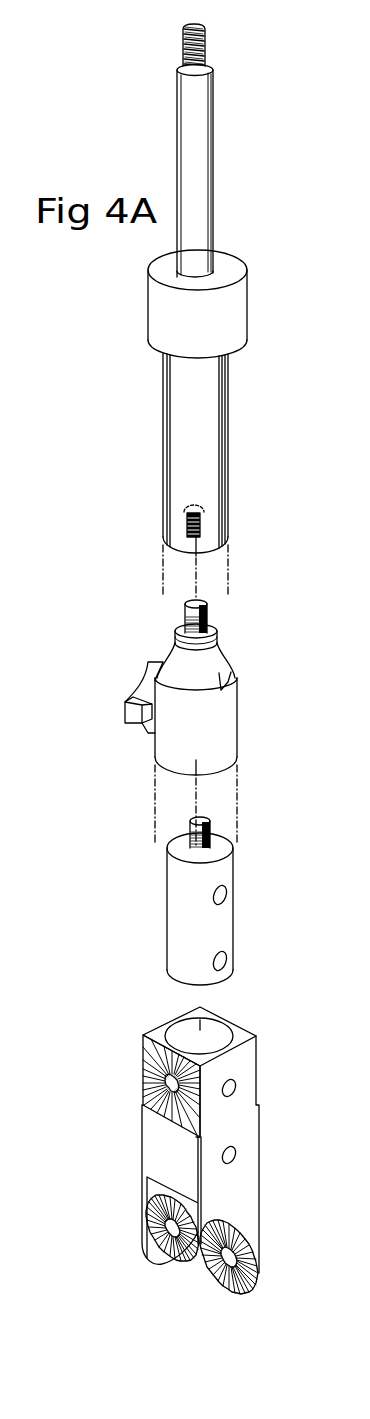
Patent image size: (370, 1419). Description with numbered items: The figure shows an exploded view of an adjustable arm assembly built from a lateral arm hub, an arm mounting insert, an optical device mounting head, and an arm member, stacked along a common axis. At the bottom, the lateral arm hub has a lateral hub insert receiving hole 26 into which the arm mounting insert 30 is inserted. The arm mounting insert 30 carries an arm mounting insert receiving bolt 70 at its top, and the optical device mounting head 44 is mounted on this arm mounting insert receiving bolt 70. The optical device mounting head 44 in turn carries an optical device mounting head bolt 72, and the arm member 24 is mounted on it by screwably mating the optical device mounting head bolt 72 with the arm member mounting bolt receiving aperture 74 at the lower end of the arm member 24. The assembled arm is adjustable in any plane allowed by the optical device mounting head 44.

The arm member 24 is at (200, 430).
The arm member mounting bolt receiving aperture 74 is at (205, 522).
The optical device mounting head bolt 72 is at (207, 613).
The optical device mounting head 44 is at (205, 728).
The arm mounting insert receiving bolt 70 is at (210, 823).
The arm mounting insert 30 is at (210, 925).
The lateral hub insert receiving hole 26 is at (218, 1034).